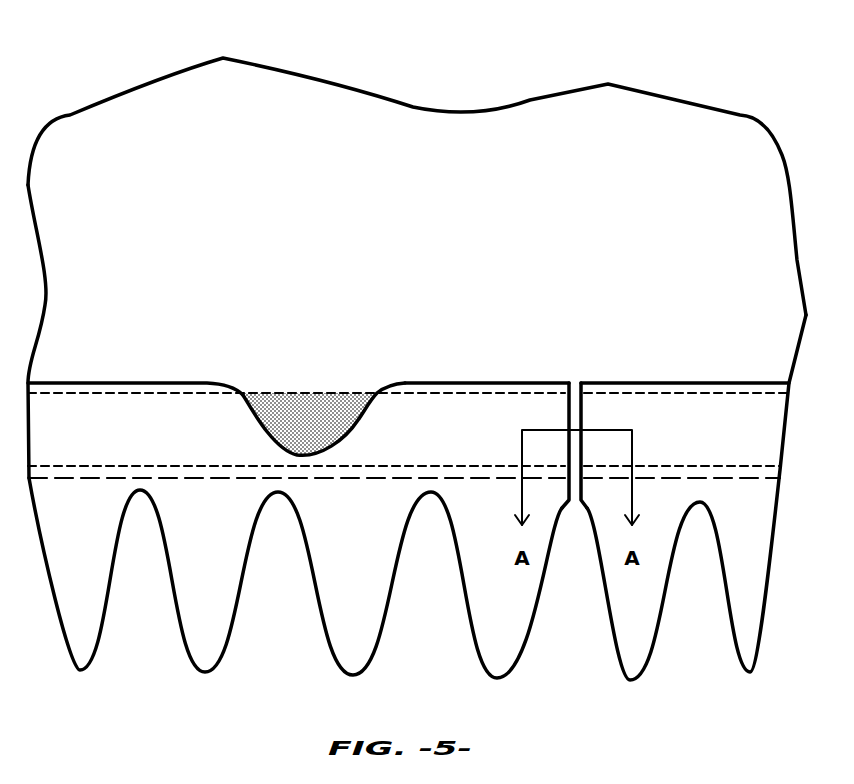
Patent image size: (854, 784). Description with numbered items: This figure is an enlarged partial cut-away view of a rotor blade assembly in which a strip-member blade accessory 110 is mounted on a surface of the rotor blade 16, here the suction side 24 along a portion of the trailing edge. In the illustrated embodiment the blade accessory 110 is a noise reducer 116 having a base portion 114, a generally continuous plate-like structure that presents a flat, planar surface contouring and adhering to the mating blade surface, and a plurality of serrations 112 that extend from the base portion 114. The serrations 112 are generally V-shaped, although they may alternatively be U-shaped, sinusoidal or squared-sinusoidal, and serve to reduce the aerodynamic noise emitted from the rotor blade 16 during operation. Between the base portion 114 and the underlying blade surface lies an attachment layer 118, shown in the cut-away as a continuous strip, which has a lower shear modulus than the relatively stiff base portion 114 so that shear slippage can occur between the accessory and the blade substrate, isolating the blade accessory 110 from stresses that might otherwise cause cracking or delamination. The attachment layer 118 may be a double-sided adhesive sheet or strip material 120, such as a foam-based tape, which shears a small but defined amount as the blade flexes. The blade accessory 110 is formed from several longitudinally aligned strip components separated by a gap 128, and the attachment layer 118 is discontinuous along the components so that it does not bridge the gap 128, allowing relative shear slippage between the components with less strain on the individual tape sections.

The rotor blade 16 is at (417, 258).
The suction side 24 is at (425, 130).
The strip-member blade accessory 110 is at (408, 394).
The serrations 112 is at (202, 640).
The base portion 114 is at (127, 410).
The noise reducer 116 is at (731, 410).
The attachment layer 118 is at (293, 407).
The double-sided adhesive sheet or strip material 120 is at (283, 425).
The gap 128 is at (573, 380).